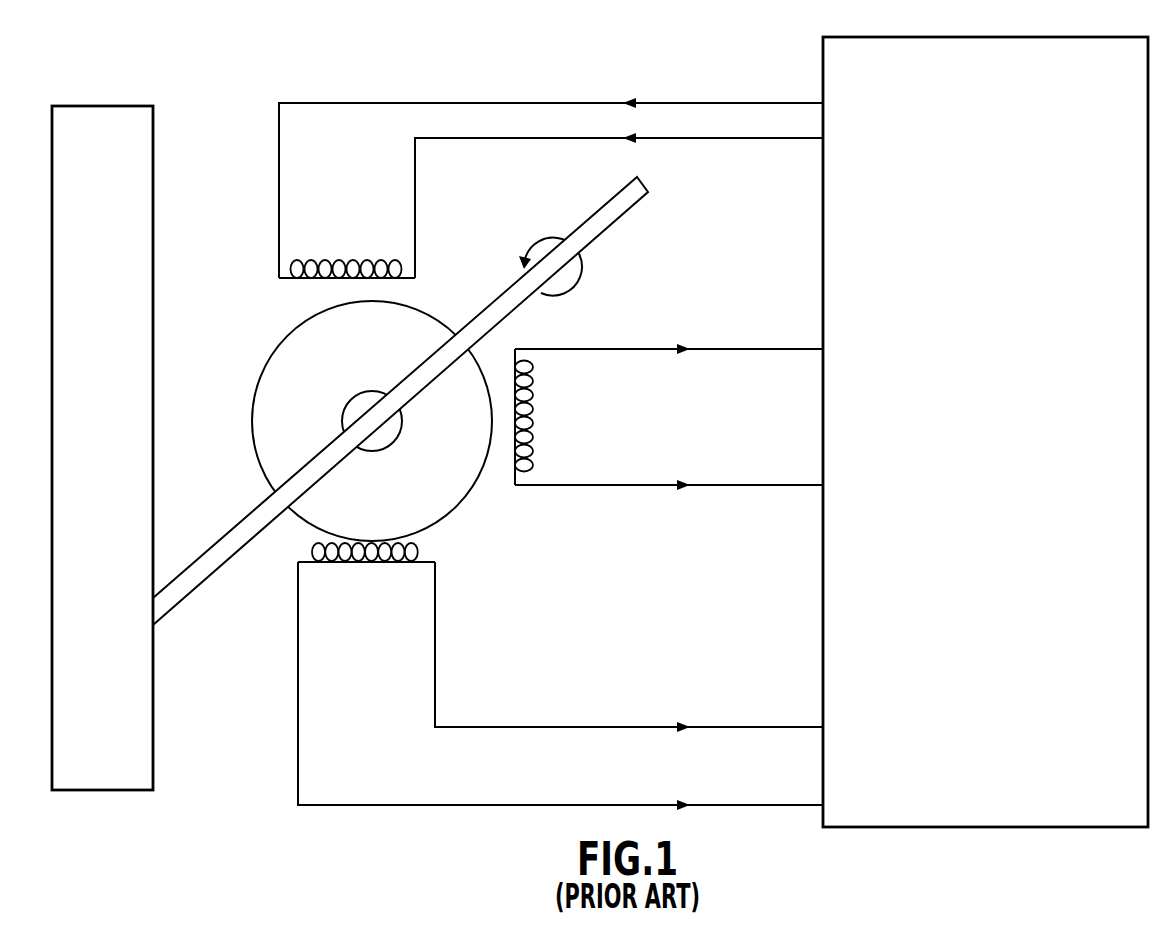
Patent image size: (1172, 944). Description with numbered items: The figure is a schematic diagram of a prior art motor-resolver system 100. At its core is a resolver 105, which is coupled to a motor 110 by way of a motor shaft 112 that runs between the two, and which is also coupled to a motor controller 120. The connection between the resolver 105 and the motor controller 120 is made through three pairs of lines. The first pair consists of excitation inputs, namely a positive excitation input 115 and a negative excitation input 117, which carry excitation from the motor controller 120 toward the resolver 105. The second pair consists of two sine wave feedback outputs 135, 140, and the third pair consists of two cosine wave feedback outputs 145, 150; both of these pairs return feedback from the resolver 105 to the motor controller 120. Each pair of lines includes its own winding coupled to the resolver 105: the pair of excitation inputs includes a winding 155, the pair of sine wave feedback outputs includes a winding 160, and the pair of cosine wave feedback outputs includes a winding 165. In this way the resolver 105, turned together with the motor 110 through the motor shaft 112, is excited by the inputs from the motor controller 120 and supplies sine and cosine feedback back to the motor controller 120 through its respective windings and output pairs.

The motor-resolver system 100 is at (71, 86).
The resolver 105 is at (261, 376).
The motor 110 is at (82, 447).
The motor shaft 112 is at (245, 518).
The positive excitation input 115 is at (503, 102).
The negative excitation input 117 is at (503, 140).
The motor controller 120 is at (964, 467).
The sine wave feedback output 135 is at (625, 348).
The sine wave feedback output 140 is at (643, 484).
The cosine wave feedback output 145 is at (560, 726).
The cosine wave feedback output 150 is at (495, 806).
The winding 155 is at (280, 278).
The winding 160 is at (515, 479).
The winding 165 is at (420, 549).